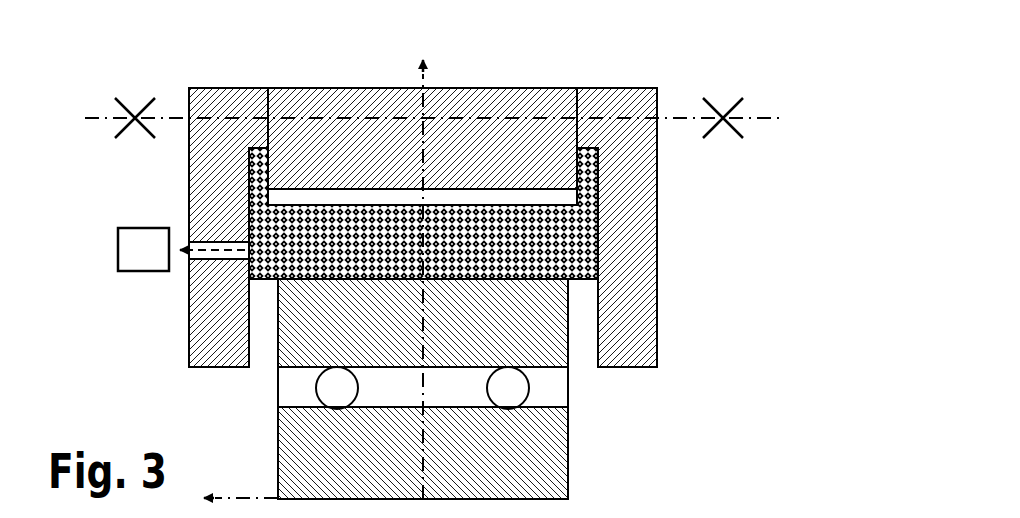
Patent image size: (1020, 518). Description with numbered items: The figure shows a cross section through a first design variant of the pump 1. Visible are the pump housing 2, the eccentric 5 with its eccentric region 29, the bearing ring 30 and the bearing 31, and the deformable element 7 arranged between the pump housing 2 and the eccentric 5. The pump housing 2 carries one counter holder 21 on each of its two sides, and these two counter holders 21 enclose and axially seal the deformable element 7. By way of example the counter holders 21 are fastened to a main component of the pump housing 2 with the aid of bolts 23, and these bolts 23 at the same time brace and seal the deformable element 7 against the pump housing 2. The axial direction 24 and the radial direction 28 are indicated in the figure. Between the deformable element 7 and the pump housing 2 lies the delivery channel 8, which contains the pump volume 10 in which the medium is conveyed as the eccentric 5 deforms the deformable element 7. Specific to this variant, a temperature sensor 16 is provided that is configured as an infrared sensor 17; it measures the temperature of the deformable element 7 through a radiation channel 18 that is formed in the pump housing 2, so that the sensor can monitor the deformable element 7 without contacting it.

The pump 1 is at (106, 76).
The pump housing 2 is at (495, 88).
The eccentric 5 is at (568, 325).
The deformable element 7 is at (612, 222).
The delivery channel 8 is at (358, 192).
The pump volume 10 is at (306, 197).
The temperature sensor 16 is at (128, 228).
The infrared sensor 17 is at (135, 271).
The radiation channel 18 is at (222, 259).
The counter holder 21 is at (189, 150).
The bolt 23 is at (135, 118).
The axial direction 24 is at (250, 498).
The radial direction 28 is at (423, 86).
The eccentric region 29 is at (568, 465).
The bearing ring 30 is at (568, 362).
The bearing 31 is at (529, 393).